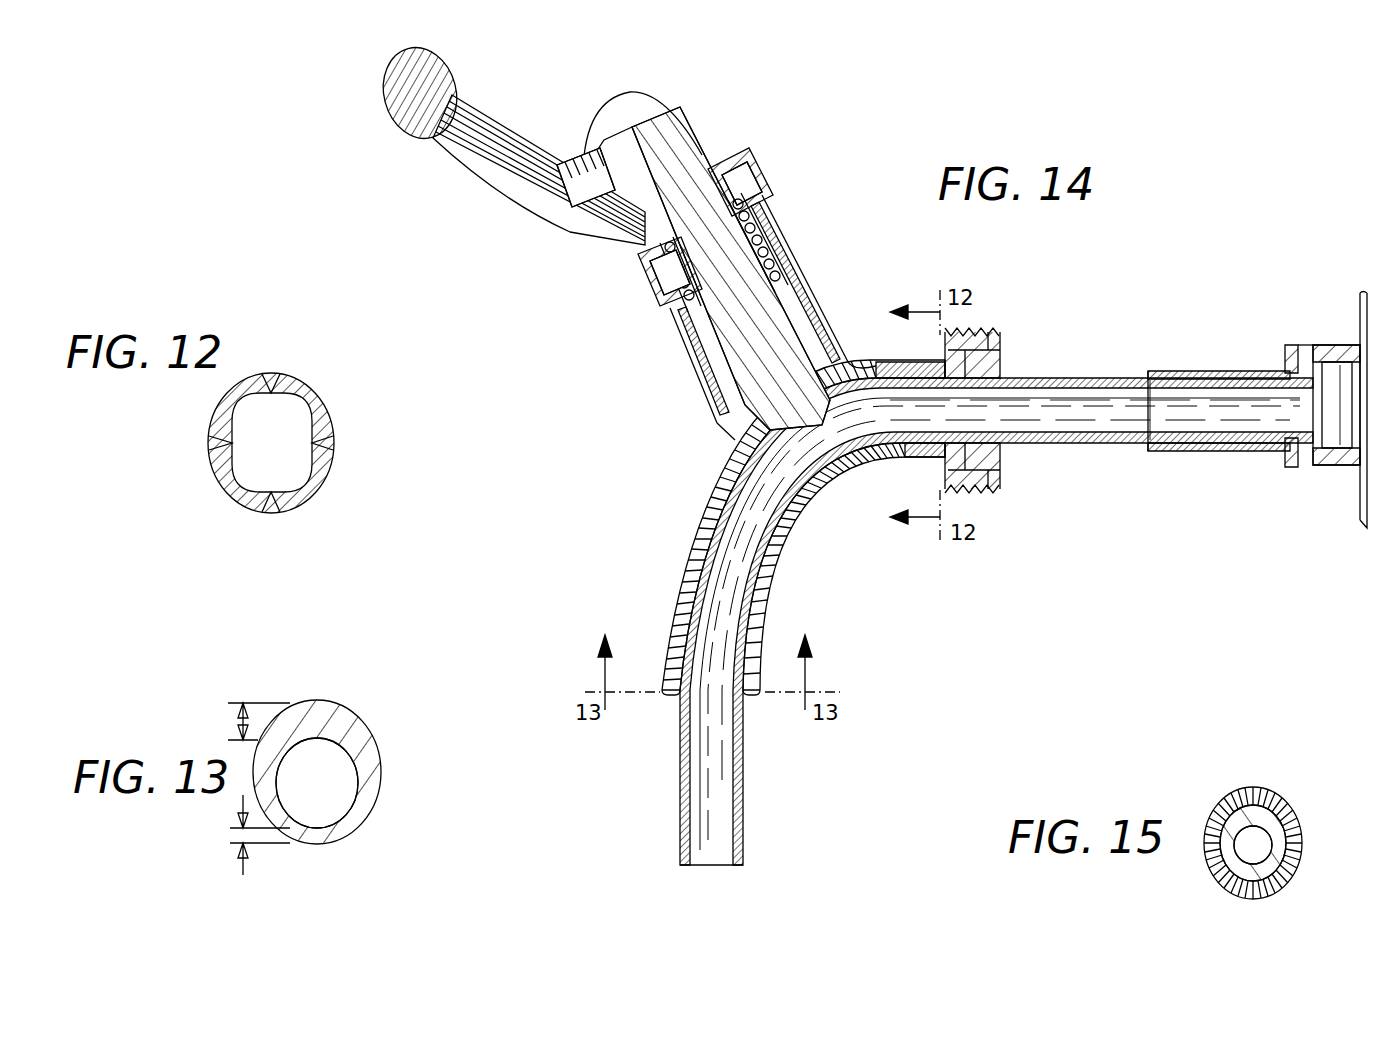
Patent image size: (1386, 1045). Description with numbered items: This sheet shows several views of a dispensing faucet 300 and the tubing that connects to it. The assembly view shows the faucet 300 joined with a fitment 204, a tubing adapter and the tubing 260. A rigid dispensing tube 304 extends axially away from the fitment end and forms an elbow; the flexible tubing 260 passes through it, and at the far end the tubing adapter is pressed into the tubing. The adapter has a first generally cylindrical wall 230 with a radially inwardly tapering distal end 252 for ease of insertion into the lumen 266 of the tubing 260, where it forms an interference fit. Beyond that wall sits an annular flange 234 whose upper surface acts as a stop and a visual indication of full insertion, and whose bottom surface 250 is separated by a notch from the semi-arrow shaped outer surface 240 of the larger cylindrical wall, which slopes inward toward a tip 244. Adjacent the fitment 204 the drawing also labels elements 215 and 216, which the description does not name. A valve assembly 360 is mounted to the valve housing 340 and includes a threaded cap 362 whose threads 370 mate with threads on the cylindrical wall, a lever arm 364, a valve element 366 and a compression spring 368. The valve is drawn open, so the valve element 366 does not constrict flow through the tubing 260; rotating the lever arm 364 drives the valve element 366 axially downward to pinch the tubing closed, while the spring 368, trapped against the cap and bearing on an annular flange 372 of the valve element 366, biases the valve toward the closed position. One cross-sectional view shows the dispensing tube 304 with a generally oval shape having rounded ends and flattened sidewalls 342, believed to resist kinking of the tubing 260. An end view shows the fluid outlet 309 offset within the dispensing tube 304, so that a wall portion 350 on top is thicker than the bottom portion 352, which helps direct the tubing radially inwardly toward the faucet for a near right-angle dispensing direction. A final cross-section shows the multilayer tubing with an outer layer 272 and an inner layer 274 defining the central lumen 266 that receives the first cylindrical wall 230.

In FIG. 14, the fitment 204 is at (1358, 519).
In FIG. 14, the connector upper wall 215 is at (1330, 346).
In FIG. 14, the connector flange 216 is at (1358, 300).
In FIG. 14, the first generally cylindrical wall 230 is at (1196, 372).
In FIG. 14, the annular flange 234 is at (1282, 340).
In FIG. 14, the semi-arrow shaped outer surface 240 is at (1315, 400).
In FIG. 14, the tip 244 is at (1335, 466).
In FIG. 14, the bottom surface 250 is at (1293, 468).
In FIG. 14, the radially inwardly tapering distal end 252 is at (1167, 418).
In FIG. 15, the tubing 260 is at (1280, 762).
In FIG. 14, the tubing 260 is at (745, 808).
In FIG. 15, the lumen 266 is at (1250, 845).
In FIG. 14, the lumen 266 is at (1072, 420).
In FIG. 15, the outer layer 272 is at (1300, 827).
In FIG. 15, the inner layer 274 is at (1285, 862).
In FIG. 14, the faucet 300 is at (900, 285).
In FIG. 12, the rigid dispensing tube 304 is at (304, 395).
In FIG. 13, the rigid dispensing tube 304 is at (381, 762).
In FIG. 14, the rigid dispensing tube 304 is at (826, 515).
In FIG. 13, the fluid outlet 309 is at (332, 787).
In FIG. 12, the valve housing 340 is at (274, 375).
In FIG. 12, the flattened sidewalls 342 is at (210, 443).
In FIG. 13, the wall portion on top of the outlet 350 is at (285, 710).
In FIG. 13, the bottom portion 352 is at (318, 845).
In FIG. 14, the valve assembly 360 is at (624, 239).
In FIG. 14, the threaded cap 362 is at (775, 190).
In FIG. 14, the lever arm 364 is at (460, 152).
In FIG. 14, the valve element 366 is at (740, 335).
In FIG. 14, the compression spring 368 is at (785, 252).
In FIG. 14, the threads 370 is at (648, 268).
In FIG. 14, the annular flange 372 is at (808, 290).